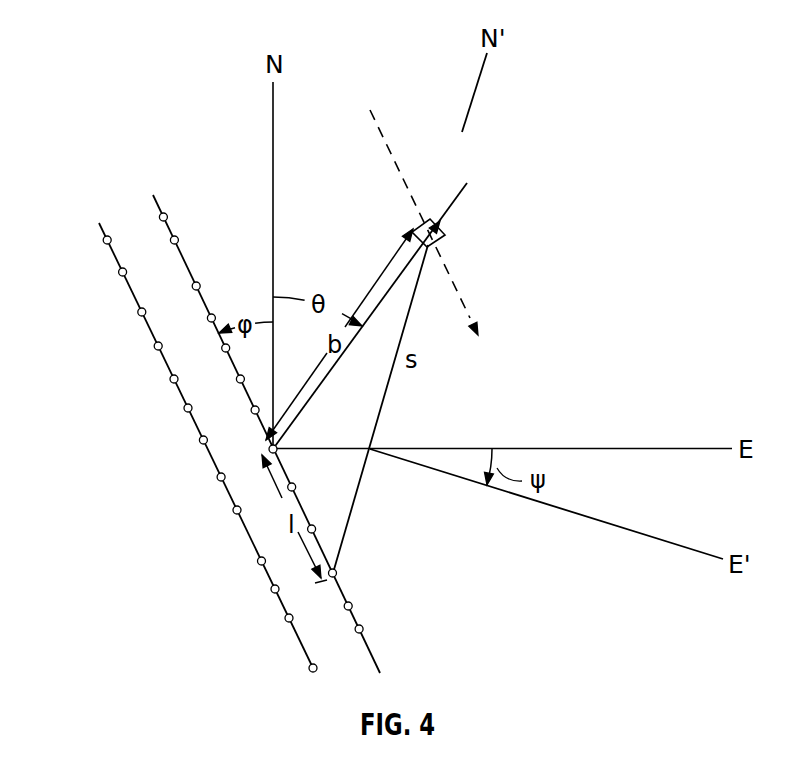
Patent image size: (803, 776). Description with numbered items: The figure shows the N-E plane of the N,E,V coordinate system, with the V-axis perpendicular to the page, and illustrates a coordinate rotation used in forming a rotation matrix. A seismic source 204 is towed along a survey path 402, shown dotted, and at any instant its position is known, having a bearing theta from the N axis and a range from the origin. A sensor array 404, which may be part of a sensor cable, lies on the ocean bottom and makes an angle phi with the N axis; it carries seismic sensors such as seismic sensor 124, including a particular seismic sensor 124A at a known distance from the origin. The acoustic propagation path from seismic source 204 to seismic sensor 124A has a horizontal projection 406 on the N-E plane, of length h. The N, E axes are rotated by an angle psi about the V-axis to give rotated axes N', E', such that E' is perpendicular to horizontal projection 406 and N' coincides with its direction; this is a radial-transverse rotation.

The seismic sensor 124 is at (155, 348).
The seismic sensor 124A is at (268, 449).
The seismic source 204 is at (437, 240).
The survey path 402 is at (398, 168).
The sensor array 404 is at (212, 424).
The propagation path horizontal projection 406 is at (383, 398).